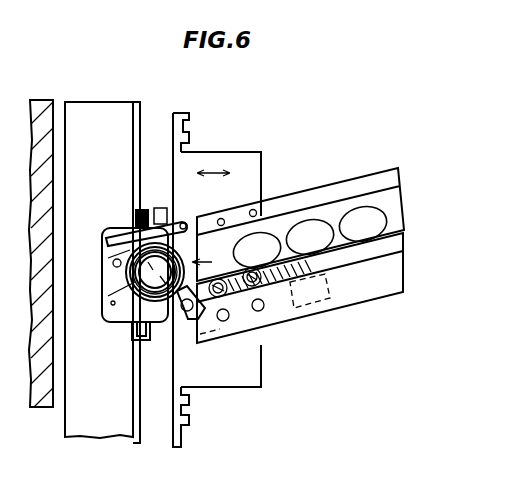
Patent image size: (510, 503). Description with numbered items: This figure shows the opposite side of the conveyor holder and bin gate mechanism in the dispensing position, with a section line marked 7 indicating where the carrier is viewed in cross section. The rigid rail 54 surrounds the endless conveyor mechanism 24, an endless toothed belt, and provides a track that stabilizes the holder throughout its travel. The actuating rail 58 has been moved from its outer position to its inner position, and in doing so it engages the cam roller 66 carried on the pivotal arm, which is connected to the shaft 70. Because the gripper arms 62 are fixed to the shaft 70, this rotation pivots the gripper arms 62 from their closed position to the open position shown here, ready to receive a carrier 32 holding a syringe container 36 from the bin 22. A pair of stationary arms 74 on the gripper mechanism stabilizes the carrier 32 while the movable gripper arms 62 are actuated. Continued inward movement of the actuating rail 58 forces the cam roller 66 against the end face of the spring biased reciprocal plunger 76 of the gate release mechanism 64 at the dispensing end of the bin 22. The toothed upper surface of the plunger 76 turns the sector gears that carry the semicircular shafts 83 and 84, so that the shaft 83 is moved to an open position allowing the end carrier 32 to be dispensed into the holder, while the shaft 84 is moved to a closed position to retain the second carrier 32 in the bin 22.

The rigid rail 54 is at (87, 110).
The endless conveyor mechanism 24 is at (187, 140).
The actuating rail 58 is at (248, 160).
The bin 22 is at (377, 168).
The gripper arm 62 is at (188, 222).
The carrier 32 is at (268, 253).
The shaft 70 is at (113, 262).
The syringe container 36 is at (141, 272).
The stationary arm 74 is at (128, 242).
The cam roller 66 is at (185, 323).
The plunger 76 is at (330, 283).
The gate release mechanism 64 is at (267, 327).
The shaft 84 is at (265, 292).
The shaft 83 is at (230, 297).
The section line 7- 7 is at (334, 118).